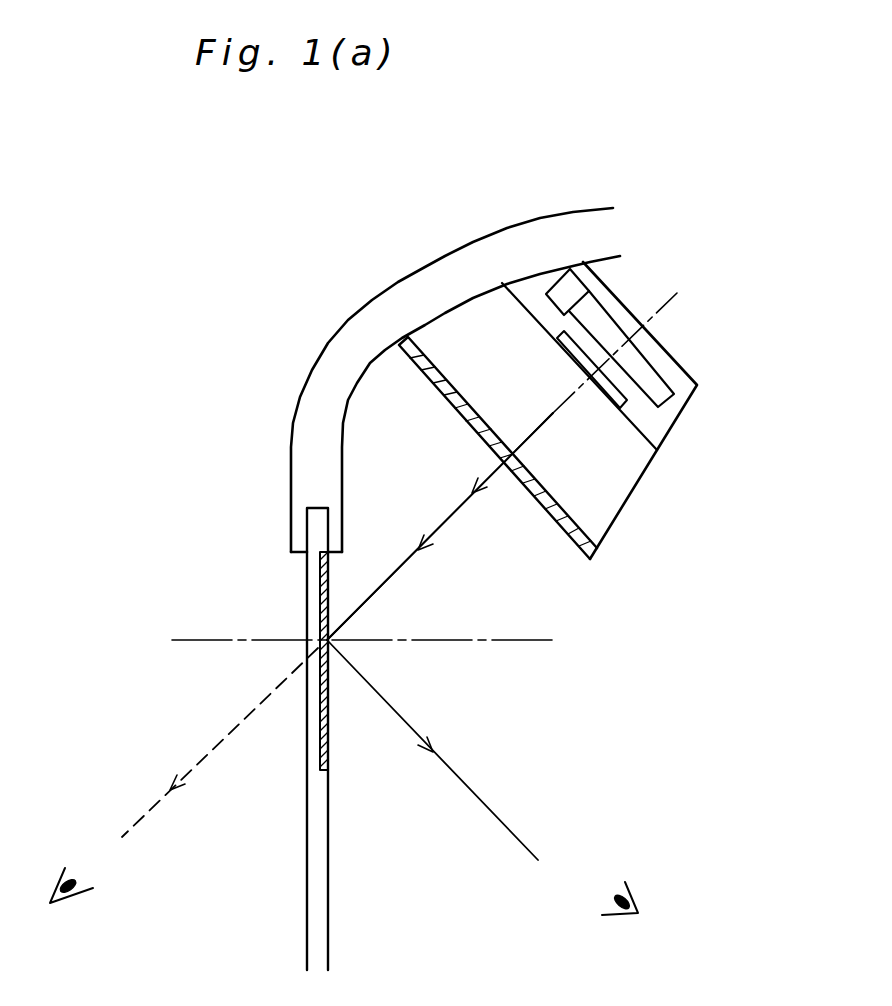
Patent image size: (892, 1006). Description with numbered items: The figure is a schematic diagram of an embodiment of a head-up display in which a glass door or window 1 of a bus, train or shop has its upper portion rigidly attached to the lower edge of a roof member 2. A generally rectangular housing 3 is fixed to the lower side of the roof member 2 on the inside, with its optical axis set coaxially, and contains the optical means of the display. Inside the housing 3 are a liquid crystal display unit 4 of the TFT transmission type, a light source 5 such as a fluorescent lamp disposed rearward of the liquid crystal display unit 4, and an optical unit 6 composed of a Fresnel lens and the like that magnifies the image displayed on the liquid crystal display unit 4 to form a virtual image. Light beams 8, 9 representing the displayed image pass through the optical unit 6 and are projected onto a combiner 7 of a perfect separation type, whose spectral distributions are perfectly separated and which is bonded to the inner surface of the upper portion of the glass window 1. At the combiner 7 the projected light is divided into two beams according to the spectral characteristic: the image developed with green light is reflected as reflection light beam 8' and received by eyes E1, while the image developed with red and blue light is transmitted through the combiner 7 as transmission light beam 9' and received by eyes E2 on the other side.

The glass door or window 1 is at (318, 876).
The roof member 2 is at (462, 266).
The housing 3 is at (655, 340).
The liquid crystal display unit 4 is at (620, 403).
The light source 5 is at (647, 377).
The optical unit 6 is at (593, 550).
The combiner 7 is at (328, 742).
The light beam 8 is at (440, 526).
The light beam 9 is at (440, 526).
The reflection light beam 8' is at (451, 750).
The transmission light beam 9' is at (220, 757).
The eyes E1 is at (634, 921).
The eyes E2 is at (72, 915).